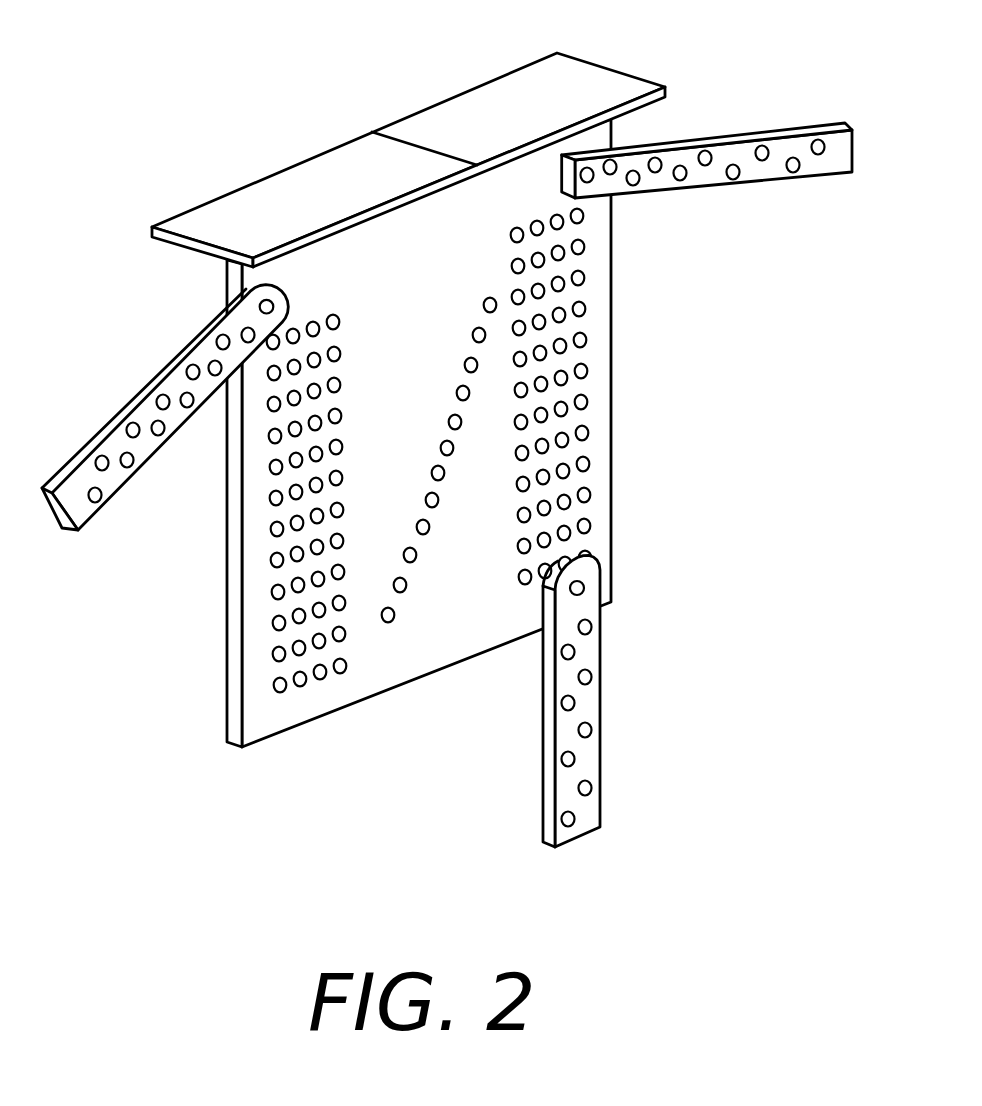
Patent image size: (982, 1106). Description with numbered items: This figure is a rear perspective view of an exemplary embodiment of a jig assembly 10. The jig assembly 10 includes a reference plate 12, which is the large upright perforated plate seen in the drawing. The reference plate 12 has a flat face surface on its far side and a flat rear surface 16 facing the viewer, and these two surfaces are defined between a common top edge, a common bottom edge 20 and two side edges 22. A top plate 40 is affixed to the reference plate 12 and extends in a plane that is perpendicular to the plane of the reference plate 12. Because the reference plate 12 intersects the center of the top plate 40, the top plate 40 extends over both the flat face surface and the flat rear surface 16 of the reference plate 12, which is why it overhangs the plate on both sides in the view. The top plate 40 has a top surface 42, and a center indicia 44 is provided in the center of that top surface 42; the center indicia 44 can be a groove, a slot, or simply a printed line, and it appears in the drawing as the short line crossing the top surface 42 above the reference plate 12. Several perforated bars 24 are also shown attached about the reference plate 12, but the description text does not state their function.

The jig assembly 10 is at (662, 67).
The reference plate 12 is at (612, 440).
The flat rear surface 16 is at (415, 638).
The top plate 40 is at (487, 105).
The top surface 42 is at (264, 200).
The center indicia 44 is at (412, 142).
The common bottom edge 20 is at (165, 407).
The side edges 22 is at (707, 160).
The bottom vertical arm 24 is at (571, 702).